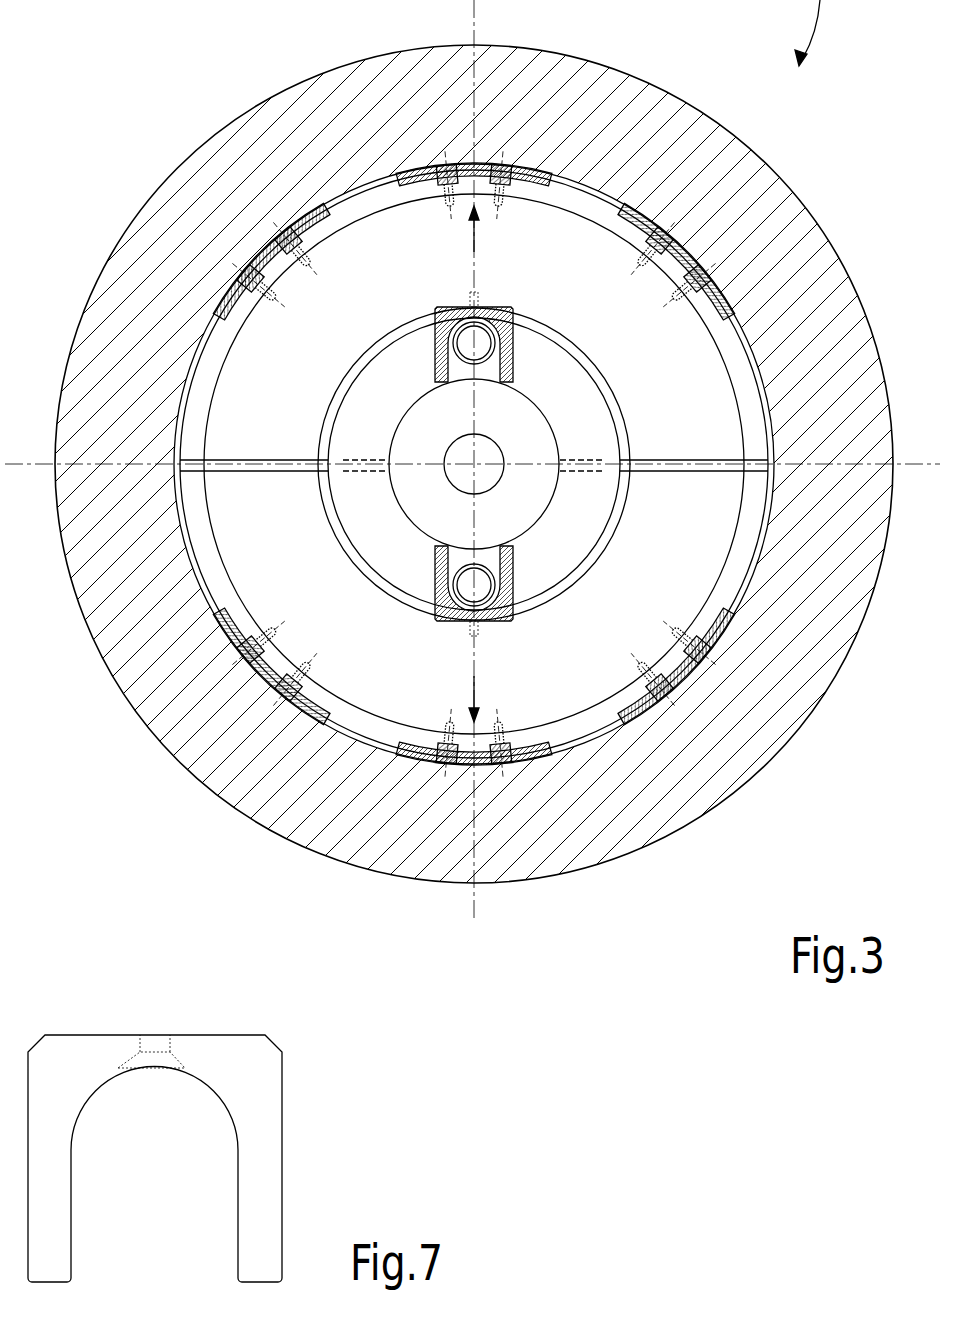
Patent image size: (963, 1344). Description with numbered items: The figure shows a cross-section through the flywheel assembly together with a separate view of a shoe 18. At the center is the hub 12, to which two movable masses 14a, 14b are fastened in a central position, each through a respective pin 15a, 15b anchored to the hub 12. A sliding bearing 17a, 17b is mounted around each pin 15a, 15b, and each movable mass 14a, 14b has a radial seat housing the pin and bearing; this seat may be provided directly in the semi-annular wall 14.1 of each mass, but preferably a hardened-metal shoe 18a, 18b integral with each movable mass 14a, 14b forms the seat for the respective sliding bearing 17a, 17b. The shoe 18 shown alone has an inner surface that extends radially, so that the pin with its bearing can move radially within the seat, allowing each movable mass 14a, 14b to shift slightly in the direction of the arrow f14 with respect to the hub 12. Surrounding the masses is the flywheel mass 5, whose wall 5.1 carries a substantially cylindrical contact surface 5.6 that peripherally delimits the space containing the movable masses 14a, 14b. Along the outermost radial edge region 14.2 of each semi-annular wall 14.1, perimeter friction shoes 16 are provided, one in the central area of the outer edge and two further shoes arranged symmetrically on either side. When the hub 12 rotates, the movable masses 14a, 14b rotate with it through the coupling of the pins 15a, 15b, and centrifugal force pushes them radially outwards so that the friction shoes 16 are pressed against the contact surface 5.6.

In FIG. 3, the flywheel mass 5 is at (537, 888).
In FIG. 3, the housing wall 5.1 is at (842, 301).
In FIG. 3, the contact surface 5.6 is at (758, 367).
In FIG. 3, the hub 12 is at (583, 385).
In FIG. 3, the movable mass 14a is at (232, 419).
In FIG. 3, the movable mass 14b is at (720, 538).
In FIG. 3, the semi-annular wall 14.1 is at (298, 386).
In FIG. 3, the edge region of ring element 14.2 is at (737, 387).
In FIG. 3, the direction of movement f14 is at (480, 240).
In FIG. 3, the pin 15a is at (505, 360).
In FIG. 3, the pin 15b is at (505, 590).
In FIG. 3, the perimeter friction shoes 16 is at (531, 163).
In FIG. 3, the sliding bearing 17a is at (488, 343).
In FIG. 3, the sliding bearing 17b is at (488, 588).
In FIG. 3, the shoe 18a is at (436, 365).
In FIG. 3, the shoe 18b is at (436, 563).
In FIG. 7, the shoe 18 is at (100, 1014).